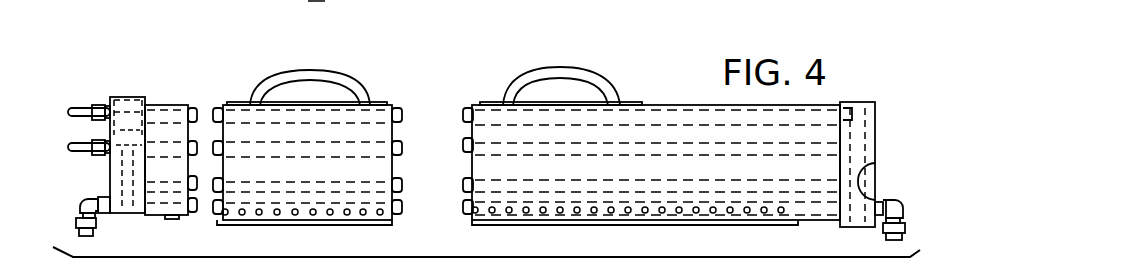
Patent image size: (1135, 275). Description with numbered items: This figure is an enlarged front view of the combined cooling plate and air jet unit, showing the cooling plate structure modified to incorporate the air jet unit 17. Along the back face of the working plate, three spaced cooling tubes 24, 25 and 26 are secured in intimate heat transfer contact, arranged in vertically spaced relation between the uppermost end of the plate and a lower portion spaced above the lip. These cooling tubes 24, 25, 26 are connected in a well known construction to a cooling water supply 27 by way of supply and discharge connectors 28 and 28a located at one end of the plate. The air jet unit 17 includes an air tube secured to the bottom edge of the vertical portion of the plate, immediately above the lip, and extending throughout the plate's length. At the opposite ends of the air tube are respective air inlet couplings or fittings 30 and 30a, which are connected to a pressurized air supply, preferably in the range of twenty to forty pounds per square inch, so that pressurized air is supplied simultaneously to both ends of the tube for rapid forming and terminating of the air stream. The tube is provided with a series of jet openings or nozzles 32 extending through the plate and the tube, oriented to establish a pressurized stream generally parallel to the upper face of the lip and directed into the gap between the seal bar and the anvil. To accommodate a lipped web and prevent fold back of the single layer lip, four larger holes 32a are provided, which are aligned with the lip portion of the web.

The air jet unit 17 is at (398, 221).
The cooling tube 24 is at (463, 114).
The cooling tube 25 is at (463, 149).
The cooling tube 26 is at (462, 188).
The cooling water supply 27 is at (464, 213).
The supply connector 28 is at (84, 109).
The discharge connector 28a is at (82, 150).
The air inlet fitting 30 is at (97, 233).
The air inlet fitting 30a is at (902, 200).
The jet openings 32 is at (347, 209).
The larger holes 32a is at (714, 207).